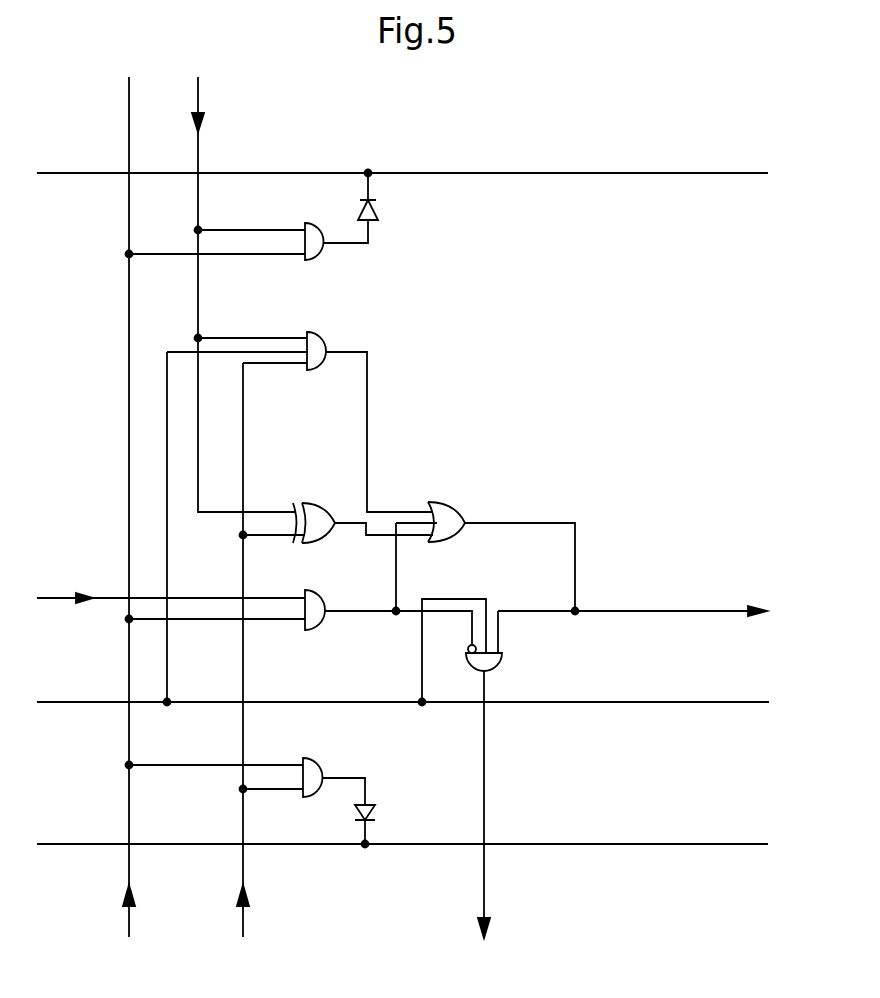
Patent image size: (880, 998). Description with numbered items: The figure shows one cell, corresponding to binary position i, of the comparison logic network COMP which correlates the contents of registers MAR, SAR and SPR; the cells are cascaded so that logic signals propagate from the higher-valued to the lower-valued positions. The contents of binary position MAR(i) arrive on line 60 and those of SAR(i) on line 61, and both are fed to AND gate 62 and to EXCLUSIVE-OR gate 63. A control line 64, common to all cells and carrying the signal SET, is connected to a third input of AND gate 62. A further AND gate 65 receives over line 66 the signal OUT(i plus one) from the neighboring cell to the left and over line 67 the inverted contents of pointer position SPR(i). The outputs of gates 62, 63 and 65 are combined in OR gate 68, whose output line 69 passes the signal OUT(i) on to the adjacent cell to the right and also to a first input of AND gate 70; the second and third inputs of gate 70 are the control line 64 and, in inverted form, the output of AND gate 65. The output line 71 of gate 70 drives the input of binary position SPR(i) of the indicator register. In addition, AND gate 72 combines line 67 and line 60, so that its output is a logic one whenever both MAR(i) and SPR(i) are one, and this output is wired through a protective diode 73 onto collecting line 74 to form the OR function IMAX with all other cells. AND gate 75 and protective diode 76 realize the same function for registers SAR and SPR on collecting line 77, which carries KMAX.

The line 60 is at (200, 143).
The line 61 is at (241, 875).
The AND gate 62 is at (318, 372).
The EXCLUSIVE-OR gate 63 is at (315, 500).
The control line 64 is at (70, 705).
The AND gate 65 is at (315, 632).
The line 66 is at (60, 601).
The line 67 is at (131, 866).
The OR gate 68 is at (446, 501).
The output line 69 is at (643, 609).
The AND gate 70 is at (503, 661).
The output line 71 is at (486, 880).
The AND gate 72 is at (318, 262).
The protective diode 73 is at (378, 214).
The collecting line 74 is at (520, 176).
The AND gate 75 is at (312, 757).
The protective diode 76 is at (376, 812).
The collecting line 77 is at (303, 847).